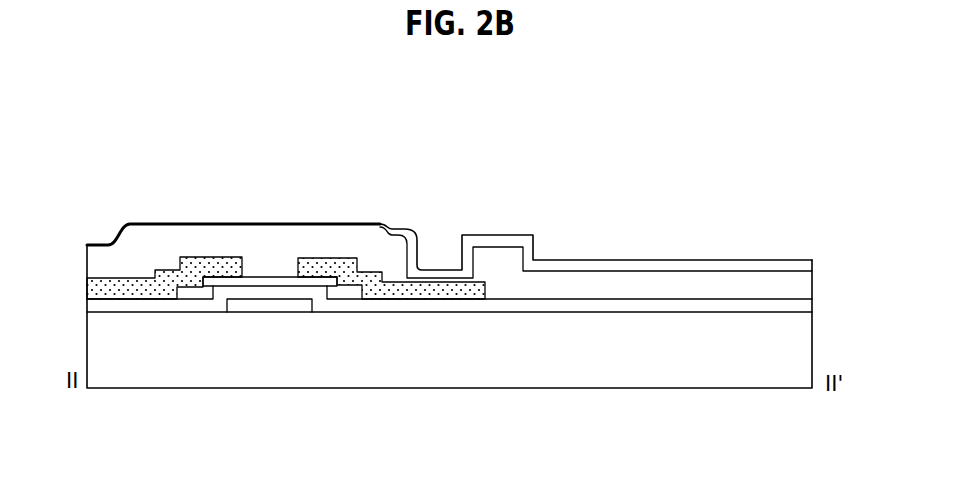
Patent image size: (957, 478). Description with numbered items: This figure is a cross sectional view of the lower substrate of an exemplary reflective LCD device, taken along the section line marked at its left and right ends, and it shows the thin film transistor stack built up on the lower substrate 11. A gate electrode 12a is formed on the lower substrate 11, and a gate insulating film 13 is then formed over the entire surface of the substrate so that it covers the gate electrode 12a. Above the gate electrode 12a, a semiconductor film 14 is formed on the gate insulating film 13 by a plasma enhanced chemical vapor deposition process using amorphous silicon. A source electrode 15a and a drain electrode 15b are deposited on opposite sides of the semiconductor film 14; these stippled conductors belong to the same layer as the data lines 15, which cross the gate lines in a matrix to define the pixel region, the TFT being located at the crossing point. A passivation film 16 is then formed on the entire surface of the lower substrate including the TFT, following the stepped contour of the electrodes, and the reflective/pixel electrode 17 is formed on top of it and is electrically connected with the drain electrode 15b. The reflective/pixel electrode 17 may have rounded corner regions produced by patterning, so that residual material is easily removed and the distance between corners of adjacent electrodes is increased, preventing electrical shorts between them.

The lower substrate 11 is at (805, 343).
The gate electrode 12a is at (273, 312).
The gate insulating film 13 is at (805, 307).
The semiconductor film 14 is at (263, 278).
The data line 15 is at (261, 237).
The source electrode 15a is at (203, 256).
The drain electrode 15b is at (318, 258).
The passivation film 16 is at (807, 283).
The reflective/pixel electrode 17 is at (638, 260).